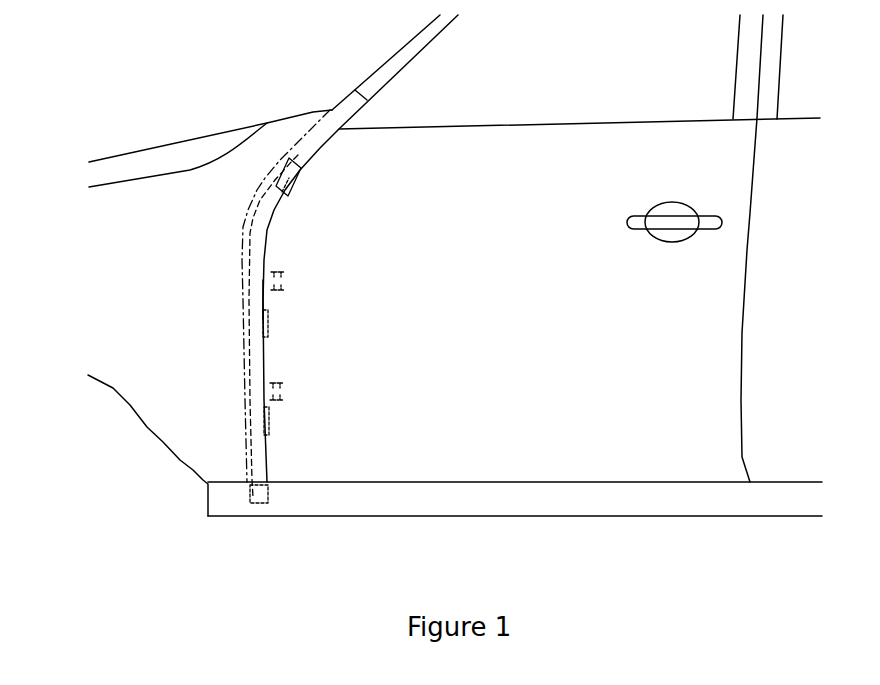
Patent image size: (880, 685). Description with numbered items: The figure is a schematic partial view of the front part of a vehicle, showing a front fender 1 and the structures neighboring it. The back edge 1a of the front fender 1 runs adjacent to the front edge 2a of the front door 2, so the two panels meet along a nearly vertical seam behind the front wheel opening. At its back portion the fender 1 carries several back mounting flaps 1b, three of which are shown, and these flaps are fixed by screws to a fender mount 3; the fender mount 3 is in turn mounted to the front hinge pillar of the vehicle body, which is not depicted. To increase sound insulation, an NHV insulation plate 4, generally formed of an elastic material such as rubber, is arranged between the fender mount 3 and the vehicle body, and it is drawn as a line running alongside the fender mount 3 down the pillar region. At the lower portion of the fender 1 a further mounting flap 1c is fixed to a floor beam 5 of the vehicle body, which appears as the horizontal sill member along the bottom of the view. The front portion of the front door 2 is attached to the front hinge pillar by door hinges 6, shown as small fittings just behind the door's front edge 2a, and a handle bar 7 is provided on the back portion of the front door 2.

The front fender 1 is at (148, 212).
The back edge 1a is at (272, 353).
The back mounting flaps 1b is at (294, 183).
The mounting flap 1c is at (262, 495).
The front door 2 is at (708, 350).
The front edge 2a is at (256, 298).
The fender mount 3 is at (302, 140).
The NHV insulation plate 4 is at (252, 375).
The floor beam 5 is at (390, 503).
The door hinges 6 is at (287, 278).
The handle bar 7 is at (720, 220).